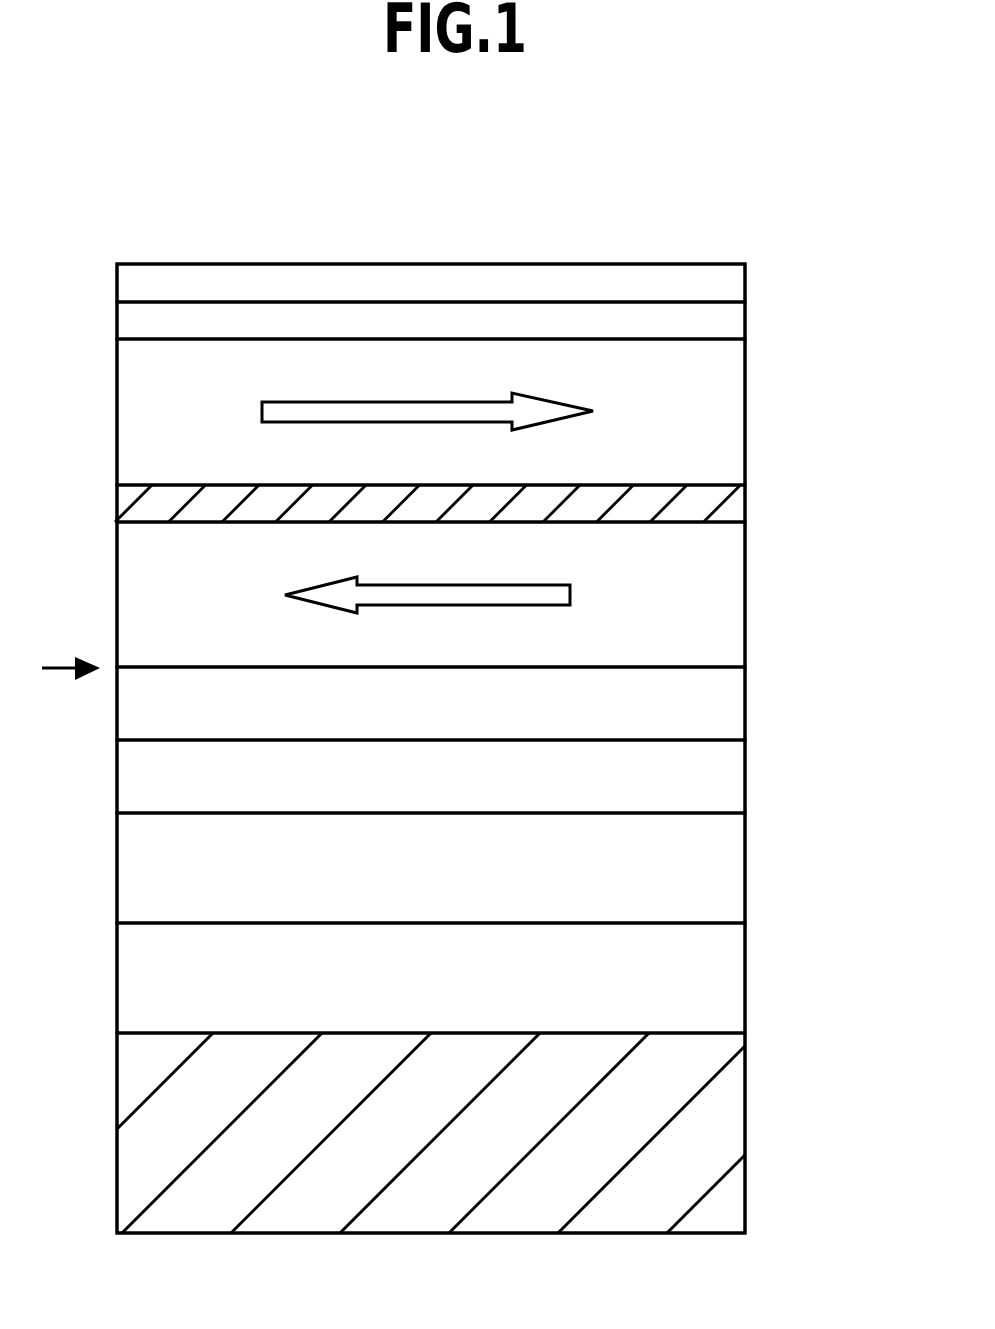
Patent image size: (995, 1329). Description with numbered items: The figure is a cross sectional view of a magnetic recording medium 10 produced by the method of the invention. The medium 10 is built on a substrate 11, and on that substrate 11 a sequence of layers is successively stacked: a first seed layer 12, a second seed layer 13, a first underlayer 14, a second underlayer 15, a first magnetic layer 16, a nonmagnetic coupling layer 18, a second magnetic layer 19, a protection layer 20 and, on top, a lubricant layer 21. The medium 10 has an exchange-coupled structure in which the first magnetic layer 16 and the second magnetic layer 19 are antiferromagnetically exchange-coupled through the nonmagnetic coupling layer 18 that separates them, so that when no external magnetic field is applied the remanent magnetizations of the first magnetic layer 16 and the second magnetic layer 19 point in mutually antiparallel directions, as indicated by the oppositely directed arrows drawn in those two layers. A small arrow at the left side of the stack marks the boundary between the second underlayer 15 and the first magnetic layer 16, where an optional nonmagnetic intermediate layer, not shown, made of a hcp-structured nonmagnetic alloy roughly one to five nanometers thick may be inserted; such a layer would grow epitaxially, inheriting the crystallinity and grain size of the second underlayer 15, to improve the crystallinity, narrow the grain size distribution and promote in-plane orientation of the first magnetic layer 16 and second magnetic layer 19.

The magnetic recording medium 10 is at (156, 229).
The substrate 11 is at (745, 1147).
The first seed layer 12 is at (745, 982).
The second seed layer 13 is at (745, 872).
The first underlayer 14 is at (745, 786).
The second underlayer 15 is at (745, 693).
The first magnetic layer 16 is at (745, 598).
The nonmagnetic coupling layer 18 is at (745, 506).
The second magnetic layer 19 is at (745, 421).
The protection layer 20 is at (745, 326).
The lubricant layer 21 is at (745, 283).